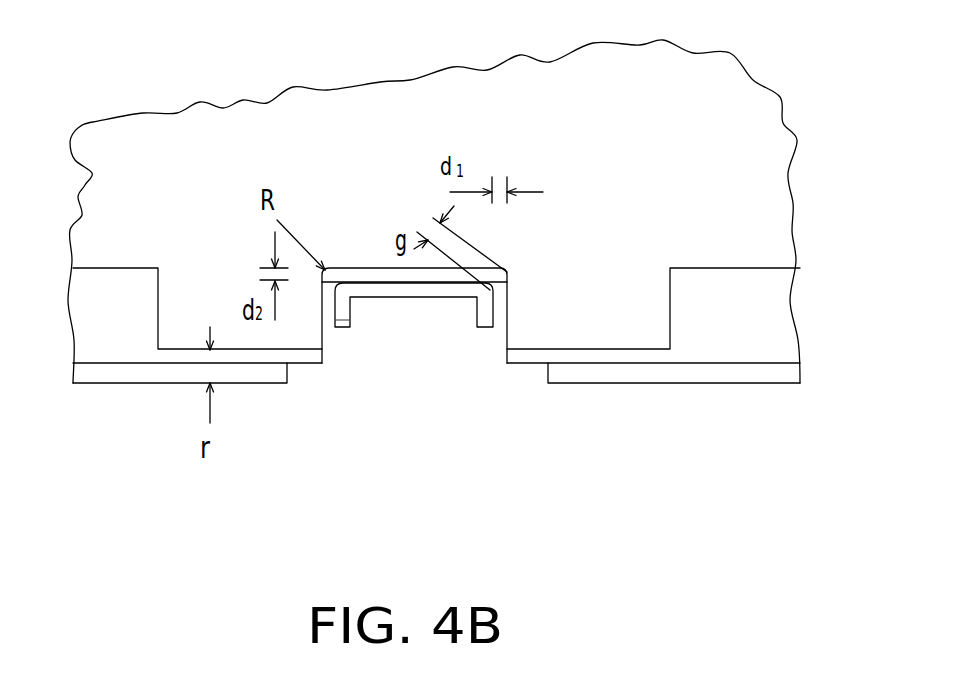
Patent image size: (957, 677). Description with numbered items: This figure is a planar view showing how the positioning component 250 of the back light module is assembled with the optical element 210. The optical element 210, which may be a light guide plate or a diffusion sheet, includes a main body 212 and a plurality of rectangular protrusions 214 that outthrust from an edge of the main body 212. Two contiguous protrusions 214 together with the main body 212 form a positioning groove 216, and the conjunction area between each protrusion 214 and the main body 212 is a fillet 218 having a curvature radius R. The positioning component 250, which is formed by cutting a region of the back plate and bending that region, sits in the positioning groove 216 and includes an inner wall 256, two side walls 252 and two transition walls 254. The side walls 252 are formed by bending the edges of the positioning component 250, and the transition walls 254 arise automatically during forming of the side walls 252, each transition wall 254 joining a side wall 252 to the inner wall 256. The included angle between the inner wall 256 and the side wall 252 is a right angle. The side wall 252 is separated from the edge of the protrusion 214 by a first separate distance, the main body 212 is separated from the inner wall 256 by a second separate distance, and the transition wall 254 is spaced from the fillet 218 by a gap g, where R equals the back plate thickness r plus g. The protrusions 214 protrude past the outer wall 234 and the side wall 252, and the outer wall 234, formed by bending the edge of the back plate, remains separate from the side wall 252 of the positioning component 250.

The optical element 210 is at (436, 387).
The main body 212 is at (712, 242).
The protrusions 214 is at (760, 462).
The positioning groove 216 is at (450, 333).
The fillet 218 is at (507, 272).
The outer wall 234 is at (147, 370).
The positioning component 250 is at (407, 395).
The side walls 252 is at (332, 366).
The transition walls 254 is at (353, 283).
The inner wall 256 is at (418, 287).